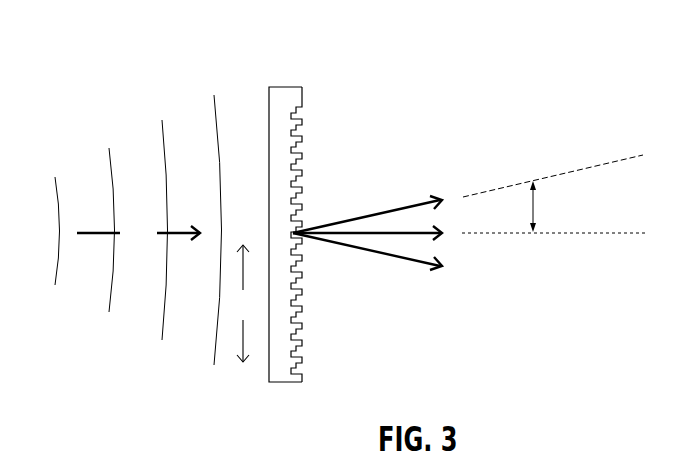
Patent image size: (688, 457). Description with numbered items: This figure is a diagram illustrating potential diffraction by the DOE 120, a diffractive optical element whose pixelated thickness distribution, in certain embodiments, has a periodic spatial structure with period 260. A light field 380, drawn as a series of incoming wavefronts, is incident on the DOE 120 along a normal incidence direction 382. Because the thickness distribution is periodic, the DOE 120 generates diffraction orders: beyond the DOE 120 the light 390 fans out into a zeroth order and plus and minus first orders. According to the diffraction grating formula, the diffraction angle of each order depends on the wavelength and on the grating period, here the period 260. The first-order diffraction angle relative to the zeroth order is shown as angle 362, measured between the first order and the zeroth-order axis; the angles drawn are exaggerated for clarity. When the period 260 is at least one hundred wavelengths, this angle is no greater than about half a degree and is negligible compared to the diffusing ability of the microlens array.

The DOE 120 is at (283, 85).
The period 260 is at (244, 303).
The angle 362 is at (533, 207).
The light field 380 is at (122, 114).
The normal incidence direction 382 is at (138, 234).
The diffracted light 390 is at (438, 305).